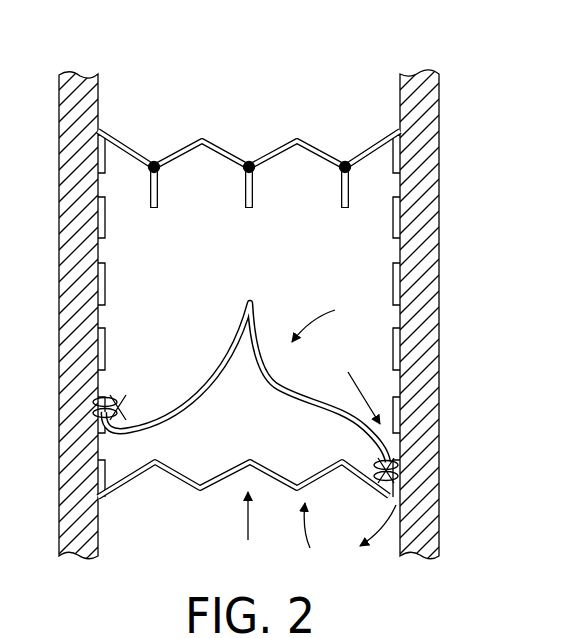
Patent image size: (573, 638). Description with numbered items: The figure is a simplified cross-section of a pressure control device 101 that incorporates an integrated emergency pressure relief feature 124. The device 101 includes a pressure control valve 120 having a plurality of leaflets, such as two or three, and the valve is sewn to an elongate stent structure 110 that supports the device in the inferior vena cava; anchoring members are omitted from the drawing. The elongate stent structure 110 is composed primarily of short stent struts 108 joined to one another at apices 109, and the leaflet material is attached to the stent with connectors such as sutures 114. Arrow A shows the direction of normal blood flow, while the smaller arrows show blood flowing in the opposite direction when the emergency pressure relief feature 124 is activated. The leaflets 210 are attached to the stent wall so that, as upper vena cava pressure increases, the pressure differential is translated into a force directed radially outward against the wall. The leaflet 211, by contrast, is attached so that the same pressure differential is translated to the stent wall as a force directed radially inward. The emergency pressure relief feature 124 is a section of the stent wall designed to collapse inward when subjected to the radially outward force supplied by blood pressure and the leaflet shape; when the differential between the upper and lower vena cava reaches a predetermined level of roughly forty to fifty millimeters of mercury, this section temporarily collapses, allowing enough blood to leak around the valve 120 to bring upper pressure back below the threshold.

The pressure control device 101 is at (333, 66).
The stent struts 108 is at (262, 152).
The apices 109 is at (155, 162).
The elongate stent structure 110 is at (346, 162).
The sutures 114 is at (120, 398).
The pressure control valve 120 is at (344, 419).
The emergency pressure relief feature 124 is at (317, 542).
The leaflets 210 is at (213, 368).
The leaflet 211 is at (186, 482).
The arrow A is at (247, 528).